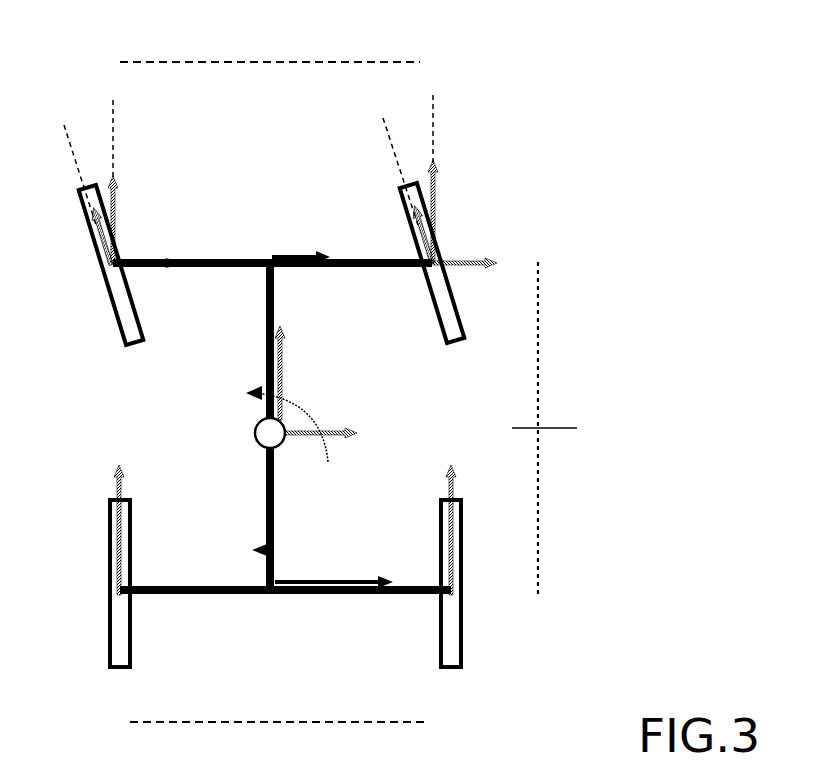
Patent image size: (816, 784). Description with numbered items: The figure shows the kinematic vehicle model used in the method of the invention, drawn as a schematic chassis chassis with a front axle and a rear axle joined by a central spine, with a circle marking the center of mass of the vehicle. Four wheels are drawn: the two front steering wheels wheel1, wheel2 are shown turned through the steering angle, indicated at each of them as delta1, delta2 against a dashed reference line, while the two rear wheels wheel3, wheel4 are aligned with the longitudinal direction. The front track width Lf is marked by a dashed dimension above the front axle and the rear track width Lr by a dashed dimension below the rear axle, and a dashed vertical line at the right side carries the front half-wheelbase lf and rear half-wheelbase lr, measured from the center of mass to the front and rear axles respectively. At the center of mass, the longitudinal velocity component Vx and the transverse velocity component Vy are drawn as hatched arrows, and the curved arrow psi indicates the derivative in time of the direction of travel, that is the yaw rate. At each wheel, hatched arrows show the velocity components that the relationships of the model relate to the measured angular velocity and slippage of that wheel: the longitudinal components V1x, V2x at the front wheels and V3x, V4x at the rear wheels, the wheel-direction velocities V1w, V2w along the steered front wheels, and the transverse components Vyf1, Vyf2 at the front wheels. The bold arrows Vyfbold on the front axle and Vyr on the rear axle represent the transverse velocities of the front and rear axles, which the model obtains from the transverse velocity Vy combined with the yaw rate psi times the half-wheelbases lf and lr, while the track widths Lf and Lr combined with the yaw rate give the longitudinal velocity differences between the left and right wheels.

The vehicle chassis (axles, spine, center of gravity) chassis is at (282, 426).
The wheel W1 wheel1 is at (111, 265).
The wheel W2 wheel2 is at (432, 263).
The wheel W3 wheel3 is at (120, 583).
The wheel W4 wheel4 is at (451, 583).
The front track width Lf is at (270, 41).
The rear track width Lr is at (279, 742).
The front half-wheelbase lf is at (544, 346).
The rear half-wheelbase lr is at (553, 514).
The steering angle delta1 is at (88, 152).
The steering angle delta2 is at (408, 152).
The front left wheel longitudinal velocity V1x is at (133, 203).
The front left wheel velocity V1w is at (72, 219).
The front left lateral velocity Vyf1 is at (146, 246).
The front right wheel longitudinal velocity V2x is at (455, 202).
The front right wheel velocity V2w is at (396, 218).
The front right lateral velocity Vyf2 is at (472, 245).
The longitudinal velocity component Vx is at (296, 373).
The transverse velocity component Vy is at (344, 439).
The rear left wheel longitudinal velocity V3x is at (138, 527).
The rear right wheel longitudinal velocity V4x is at (470, 527).
The derivative in time of the direction of travel psi is at (275, 412).
The front axle lateral velocity Vyfbold is at (301, 244).
The rear axle lateral velocity Vyr is at (322, 566).